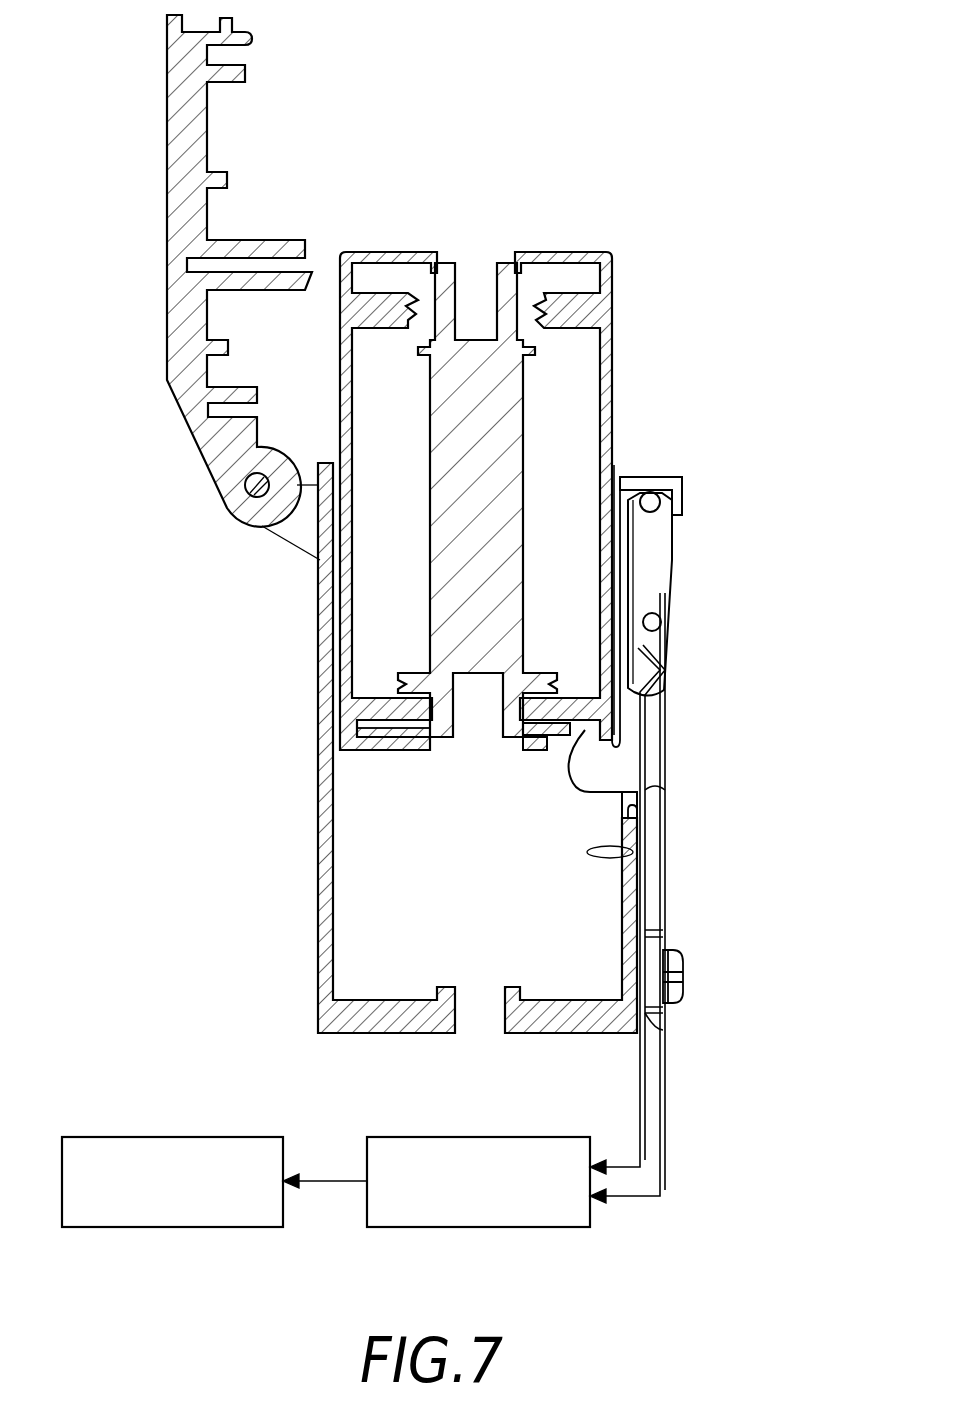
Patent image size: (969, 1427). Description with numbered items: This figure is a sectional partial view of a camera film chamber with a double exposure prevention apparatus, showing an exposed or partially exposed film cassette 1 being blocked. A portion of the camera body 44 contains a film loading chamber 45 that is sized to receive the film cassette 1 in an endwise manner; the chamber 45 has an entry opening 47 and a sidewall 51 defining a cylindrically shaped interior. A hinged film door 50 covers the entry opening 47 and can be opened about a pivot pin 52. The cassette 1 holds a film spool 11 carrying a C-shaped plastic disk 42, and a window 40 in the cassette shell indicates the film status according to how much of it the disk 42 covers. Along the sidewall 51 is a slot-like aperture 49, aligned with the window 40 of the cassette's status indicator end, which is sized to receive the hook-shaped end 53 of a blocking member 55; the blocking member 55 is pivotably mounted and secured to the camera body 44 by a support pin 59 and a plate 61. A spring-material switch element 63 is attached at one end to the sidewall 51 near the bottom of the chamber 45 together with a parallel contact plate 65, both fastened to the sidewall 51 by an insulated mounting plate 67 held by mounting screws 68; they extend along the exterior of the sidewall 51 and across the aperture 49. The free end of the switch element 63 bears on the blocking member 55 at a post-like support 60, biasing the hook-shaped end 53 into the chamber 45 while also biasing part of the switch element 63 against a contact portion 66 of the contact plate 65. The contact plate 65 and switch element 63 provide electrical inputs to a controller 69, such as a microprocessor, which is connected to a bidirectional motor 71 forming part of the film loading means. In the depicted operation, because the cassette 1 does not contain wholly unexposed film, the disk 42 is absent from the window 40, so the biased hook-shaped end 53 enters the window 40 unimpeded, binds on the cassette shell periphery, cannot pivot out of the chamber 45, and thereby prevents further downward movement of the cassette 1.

The film cassette 1 is at (612, 352).
The film spool 11 is at (500, 262).
The window 40 is at (583, 760).
The plastic disk 42 is at (410, 745).
The camera body 44 is at (683, 513).
The film loading chamber 45 is at (632, 851).
The entry opening 47 is at (614, 465).
The aperture 49 is at (638, 810).
The hinged film door 50 is at (167, 245).
The sidewall 51 is at (665, 937).
The pivot pin 52 is at (262, 490).
The hook-shaped end 53 is at (580, 775).
The blocking member 55 is at (678, 648).
The support pin 59 is at (657, 492).
The post-like support 60 is at (652, 613).
The plate 61 is at (670, 477).
The switch element 63 is at (665, 880).
The contact plate 65 is at (645, 905).
The contact portion 66 is at (663, 712).
The insulated mounting plate 67 is at (660, 1015).
The mounting screws 68 is at (685, 985).
The controller 69 is at (432, 1137).
The bidirectional motor 71 is at (90, 1135).